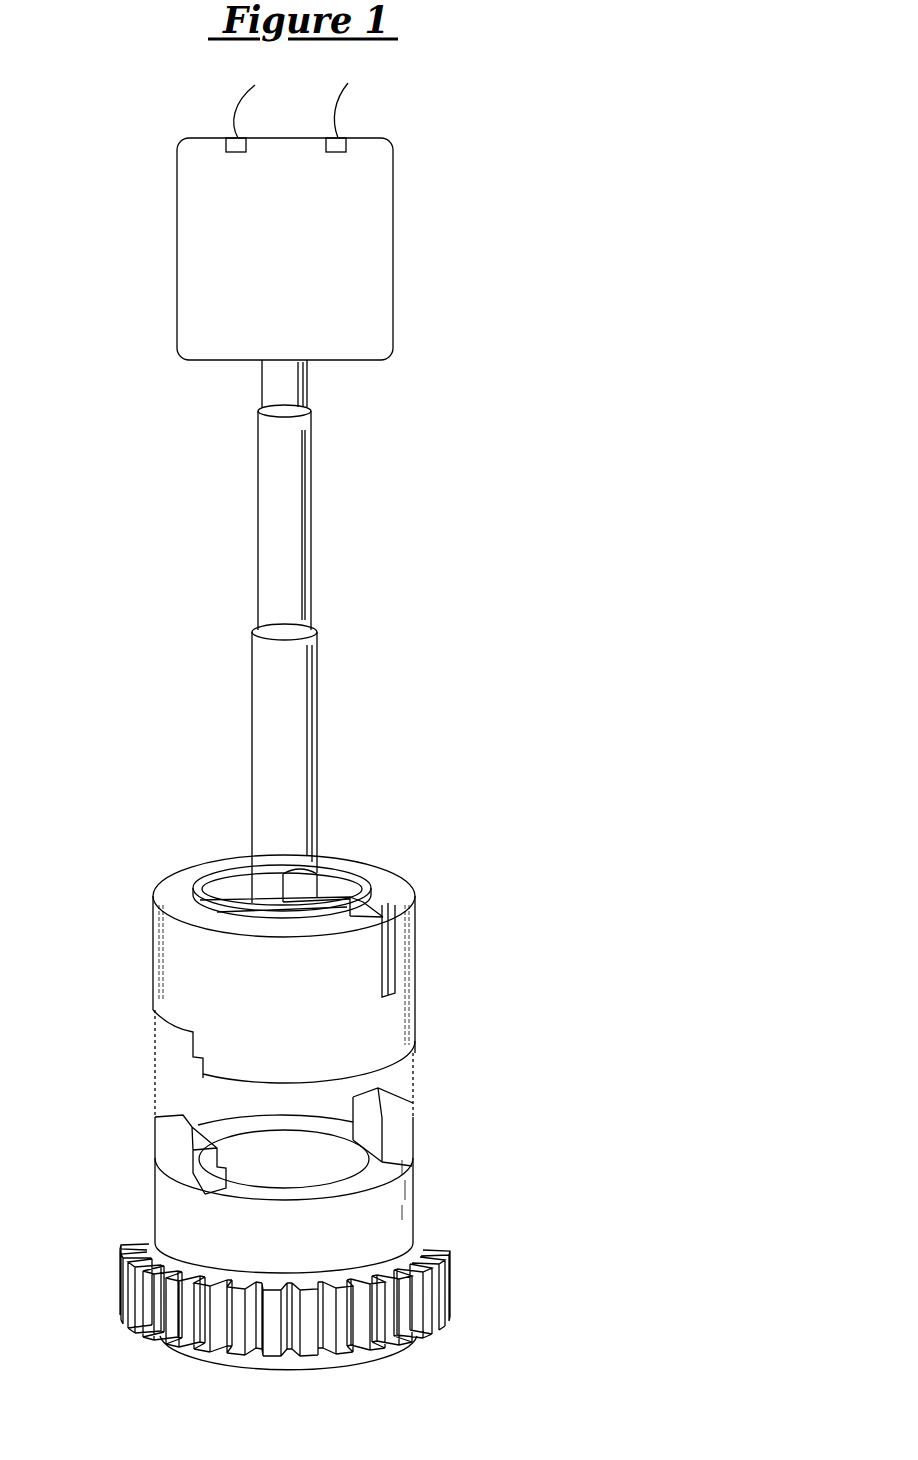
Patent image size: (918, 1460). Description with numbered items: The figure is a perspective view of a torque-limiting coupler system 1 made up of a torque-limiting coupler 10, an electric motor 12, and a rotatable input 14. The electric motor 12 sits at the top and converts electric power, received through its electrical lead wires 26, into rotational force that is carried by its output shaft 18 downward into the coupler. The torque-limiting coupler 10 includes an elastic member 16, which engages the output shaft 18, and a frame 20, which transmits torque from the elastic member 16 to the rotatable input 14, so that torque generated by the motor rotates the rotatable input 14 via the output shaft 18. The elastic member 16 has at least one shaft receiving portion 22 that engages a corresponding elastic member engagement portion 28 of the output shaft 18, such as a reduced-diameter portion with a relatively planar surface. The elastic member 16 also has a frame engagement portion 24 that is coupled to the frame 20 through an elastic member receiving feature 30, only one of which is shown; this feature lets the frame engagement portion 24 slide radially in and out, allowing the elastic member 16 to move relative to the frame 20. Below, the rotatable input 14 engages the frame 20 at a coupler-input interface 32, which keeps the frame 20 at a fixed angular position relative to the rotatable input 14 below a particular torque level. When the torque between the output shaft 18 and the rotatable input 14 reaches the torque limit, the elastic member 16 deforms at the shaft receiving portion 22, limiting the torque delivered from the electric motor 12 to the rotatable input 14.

The torque-limiting coupler system 1 is at (539, 81).
The torque-limiting coupler 10 is at (441, 672).
The electric motor 12 is at (232, 258).
The rotatable input 14 is at (400, 1150).
The elastic member 16 is at (208, 903).
The output shaft 18 is at (278, 515).
The frame 20 is at (175, 955).
The shaft receiving portion 22 is at (340, 887).
The frame engagement portion 24 is at (356, 905).
The electrical lead wires 26 is at (331, 109).
The elastic member engagement portion 28 is at (297, 882).
The elastic member receiving feature 30 is at (393, 962).
The coupler-input interface 32 is at (178, 1118).